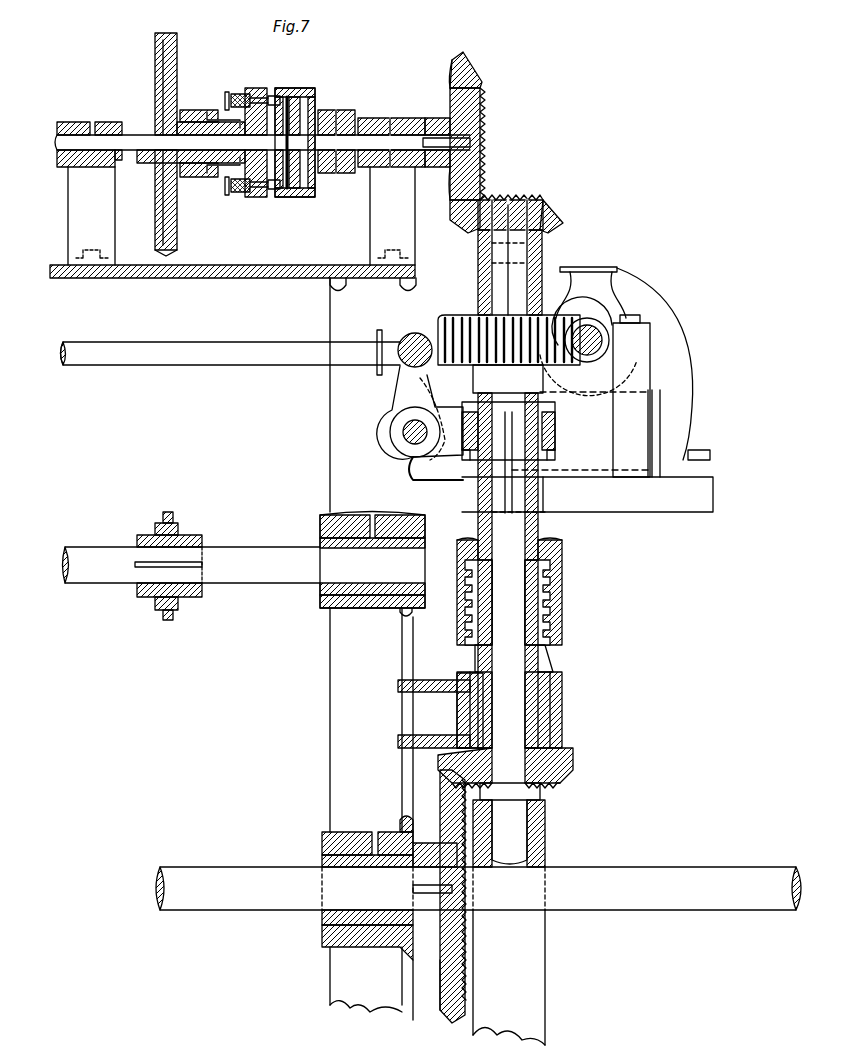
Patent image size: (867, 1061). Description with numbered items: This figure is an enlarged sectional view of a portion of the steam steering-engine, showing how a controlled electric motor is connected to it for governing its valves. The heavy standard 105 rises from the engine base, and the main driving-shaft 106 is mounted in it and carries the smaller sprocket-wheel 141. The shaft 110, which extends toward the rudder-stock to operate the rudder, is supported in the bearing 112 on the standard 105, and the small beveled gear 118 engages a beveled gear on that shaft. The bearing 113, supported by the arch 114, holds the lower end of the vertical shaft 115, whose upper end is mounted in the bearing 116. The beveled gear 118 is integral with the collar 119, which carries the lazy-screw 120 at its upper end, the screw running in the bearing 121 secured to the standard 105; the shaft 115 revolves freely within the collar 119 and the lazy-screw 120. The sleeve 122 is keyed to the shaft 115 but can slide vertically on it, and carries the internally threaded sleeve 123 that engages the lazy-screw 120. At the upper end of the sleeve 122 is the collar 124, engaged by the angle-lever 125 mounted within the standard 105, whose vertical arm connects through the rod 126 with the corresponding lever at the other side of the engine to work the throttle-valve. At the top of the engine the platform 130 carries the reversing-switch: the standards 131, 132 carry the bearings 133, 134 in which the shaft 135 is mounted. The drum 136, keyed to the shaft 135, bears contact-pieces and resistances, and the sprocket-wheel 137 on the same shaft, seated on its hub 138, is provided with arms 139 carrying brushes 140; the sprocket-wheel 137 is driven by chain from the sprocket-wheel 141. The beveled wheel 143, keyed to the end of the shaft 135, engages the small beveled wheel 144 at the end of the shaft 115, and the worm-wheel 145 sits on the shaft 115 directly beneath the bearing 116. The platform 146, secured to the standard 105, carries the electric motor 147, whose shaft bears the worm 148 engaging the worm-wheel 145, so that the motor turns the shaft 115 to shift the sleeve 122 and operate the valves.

The standard 105 is at (362, 706).
The main driving-shaft 106 is at (262, 568).
The shaft 110 is at (620, 889).
The bearing 112 is at (378, 952).
The bearing 113 is at (548, 819).
The arch 114 is at (512, 961).
The vertical shaft 115 is at (545, 533).
The bearing 116 is at (548, 275).
The small beveled gear 118 is at (575, 752).
The collar 119 is at (548, 652).
The lazy-screw 120 is at (563, 596).
The bearing 121 is at (563, 700).
The sleeve 122 is at (543, 495).
The sleeve 123 is at (562, 567).
The collar 124 is at (557, 432).
The angle-lever 125 is at (390, 410).
The rod 126 is at (225, 361).
The platform 130 is at (222, 266).
The standard 131 is at (95, 221).
The standard 132 is at (398, 216).
The bearing 133 is at (100, 114).
The bearing 134 is at (385, 118).
The shaft 135 is at (118, 132).
The drum 136 is at (315, 90).
The sprocket-wheel 137 is at (177, 74).
The hub 138 is at (186, 110).
The arms 139 is at (248, 92).
The brushes 140 is at (272, 92).
The smaller sprocket-wheel 141 is at (178, 530).
The beveled wheel 143 is at (486, 104).
The small beveled wheel 144 is at (543, 212).
The worm-wheel 145 is at (455, 308).
The platform 146 is at (660, 498).
The electric motor 147 is at (685, 346).
The worm 148 is at (605, 330).